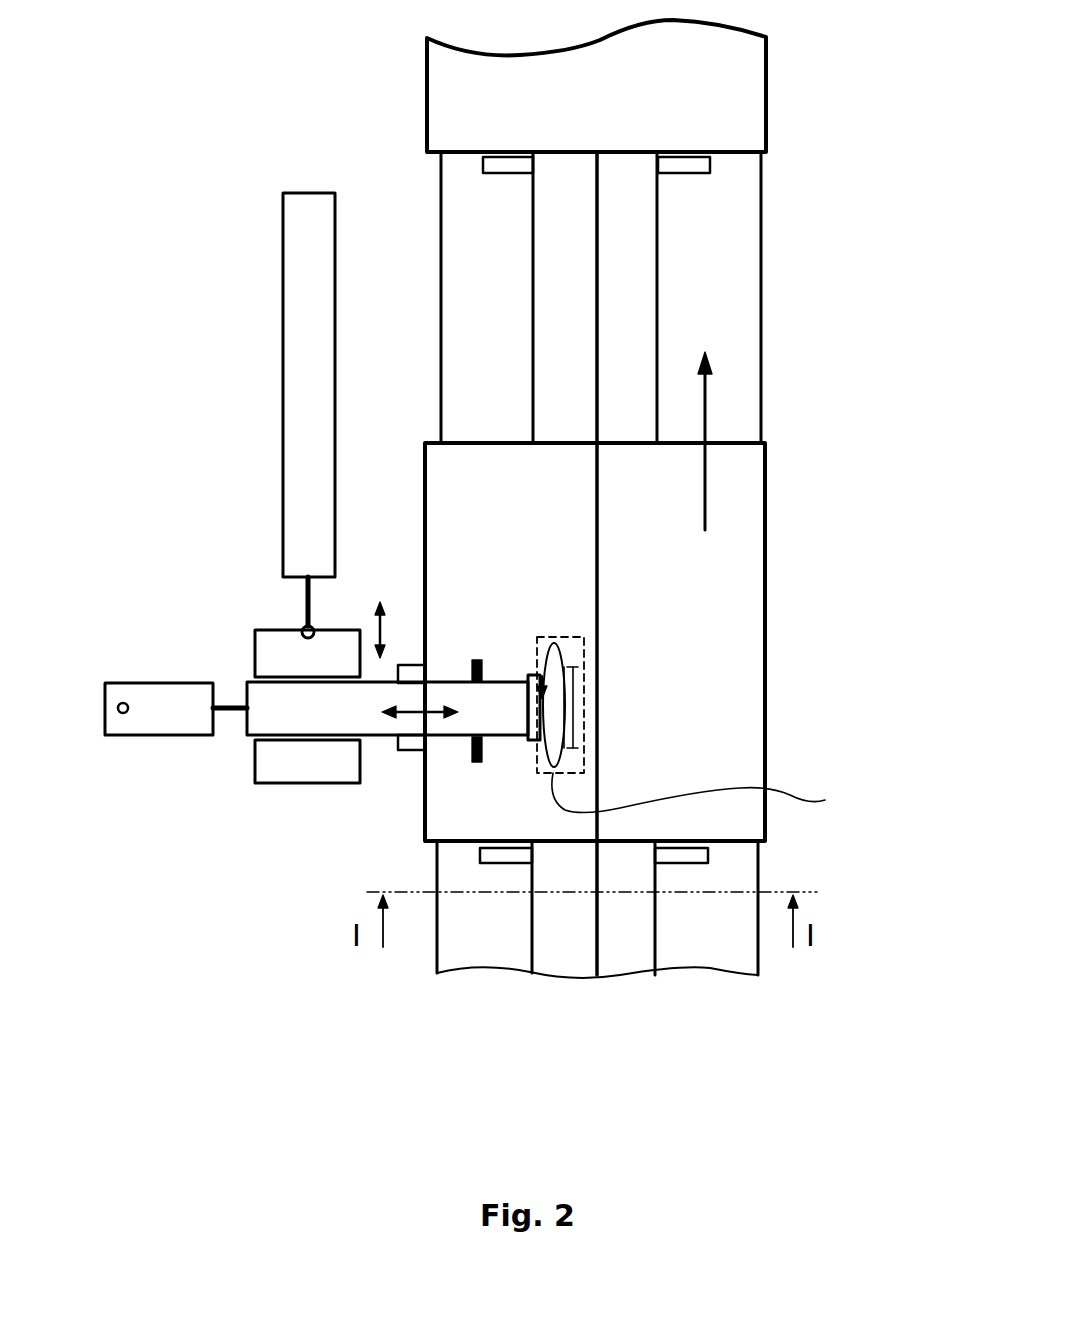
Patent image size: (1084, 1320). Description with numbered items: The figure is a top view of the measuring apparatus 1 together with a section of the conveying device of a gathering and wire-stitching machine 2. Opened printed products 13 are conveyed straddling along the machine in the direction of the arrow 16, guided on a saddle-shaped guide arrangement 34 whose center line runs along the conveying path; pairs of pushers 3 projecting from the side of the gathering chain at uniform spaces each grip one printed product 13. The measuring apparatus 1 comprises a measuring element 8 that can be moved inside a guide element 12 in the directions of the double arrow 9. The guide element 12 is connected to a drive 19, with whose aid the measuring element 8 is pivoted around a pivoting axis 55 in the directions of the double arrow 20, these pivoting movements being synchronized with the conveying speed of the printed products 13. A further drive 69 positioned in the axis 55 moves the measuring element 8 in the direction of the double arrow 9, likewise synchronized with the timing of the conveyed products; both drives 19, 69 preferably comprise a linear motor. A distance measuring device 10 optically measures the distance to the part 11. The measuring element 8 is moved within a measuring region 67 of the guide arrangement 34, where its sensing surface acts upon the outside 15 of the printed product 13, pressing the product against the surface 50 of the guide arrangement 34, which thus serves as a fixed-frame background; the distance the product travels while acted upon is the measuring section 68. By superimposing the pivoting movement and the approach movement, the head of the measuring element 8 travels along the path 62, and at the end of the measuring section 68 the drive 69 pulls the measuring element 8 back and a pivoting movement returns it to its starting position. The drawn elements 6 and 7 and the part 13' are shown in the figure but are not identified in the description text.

The measuring apparatus 1 is at (176, 560).
The gathering and wire-stitching machine 2 is at (815, 386).
The pushers 3 is at (692, 857).
The guide column 6 is at (467, 213).
The lower support 7 is at (282, 803).
The measuring element 8 is at (277, 710).
The double arrow 9 is at (418, 710).
The distance measuring device 10 is at (408, 742).
The part 11 is at (472, 760).
The guide element 12 is at (275, 652).
The printed products 13 is at (750, 642).
The upper housing part 13' is at (643, 86).
The outside of the printed product 15 is at (565, 608).
The arrow 16 is at (705, 495).
The drive 19 is at (290, 478).
The double arrow 20 is at (370, 598).
The saddle-shaped guide arrangement 34 is at (657, 257).
The surface 50 is at (597, 954).
The pivoting axis 55 is at (118, 717).
The path 62 is at (710, 797).
The measuring region 67 is at (570, 648).
The measuring section 68 is at (573, 703).
The drive 69 is at (155, 700).